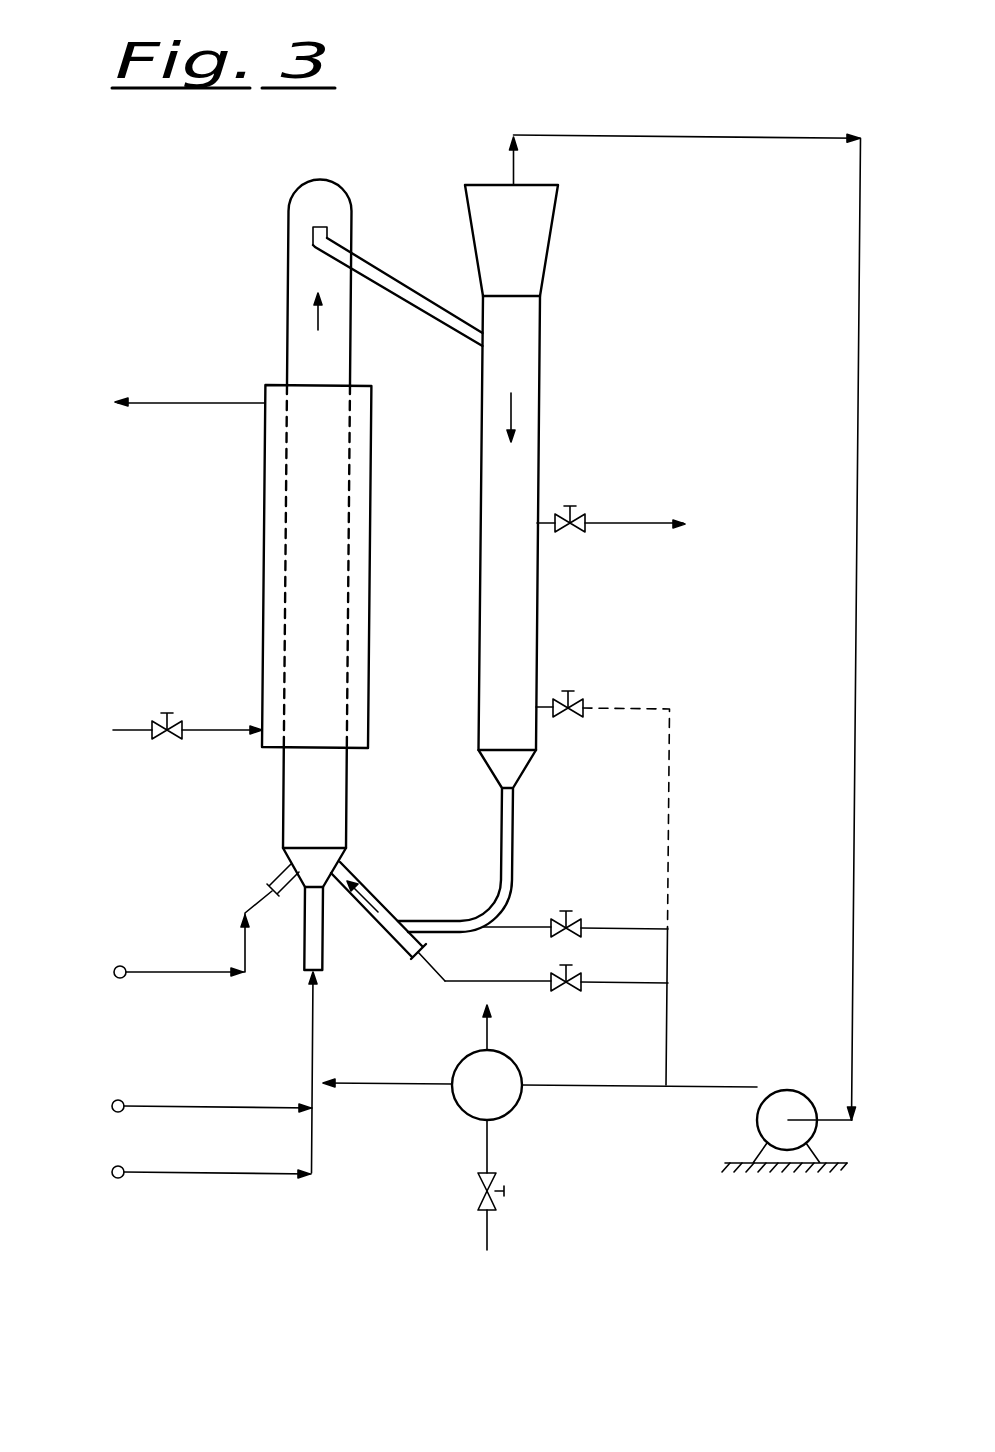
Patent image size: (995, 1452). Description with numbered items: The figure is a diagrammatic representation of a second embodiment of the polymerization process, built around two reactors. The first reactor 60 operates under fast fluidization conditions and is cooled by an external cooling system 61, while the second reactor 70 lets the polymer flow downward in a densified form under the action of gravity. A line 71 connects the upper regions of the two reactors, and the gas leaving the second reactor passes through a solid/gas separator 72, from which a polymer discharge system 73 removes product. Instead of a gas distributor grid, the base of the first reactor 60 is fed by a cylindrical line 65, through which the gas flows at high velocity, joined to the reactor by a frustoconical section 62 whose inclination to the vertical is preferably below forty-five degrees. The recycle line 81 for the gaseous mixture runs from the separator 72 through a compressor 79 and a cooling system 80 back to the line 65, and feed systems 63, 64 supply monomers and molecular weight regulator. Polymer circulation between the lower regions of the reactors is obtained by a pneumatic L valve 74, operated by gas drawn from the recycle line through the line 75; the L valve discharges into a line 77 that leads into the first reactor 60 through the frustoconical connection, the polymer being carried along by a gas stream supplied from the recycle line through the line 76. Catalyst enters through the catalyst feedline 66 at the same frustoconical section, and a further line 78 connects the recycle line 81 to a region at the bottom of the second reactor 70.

The first reactor 60 is at (288, 282).
The external cooling system 61 is at (263, 560).
The frustoconical section 62 is at (285, 857).
The feed system 63 is at (120, 1100).
The feed system 64 is at (120, 1180).
The cylindrical line 65 is at (327, 937).
The catalyst feedline 66 is at (120, 966).
The second reactor 70 is at (539, 387).
The line 71 is at (400, 282).
The solid/gas separator 72 is at (549, 245).
The polymer discharge system 73 is at (585, 508).
The L valve 74 is at (513, 860).
The line 75 is at (582, 927).
The line 76 is at (573, 992).
The line 77 is at (370, 892).
The line 78 is at (670, 817).
The compressor 79 is at (760, 1113).
The cooling system 80 is at (460, 1105).
The recycle line 81 is at (856, 588).